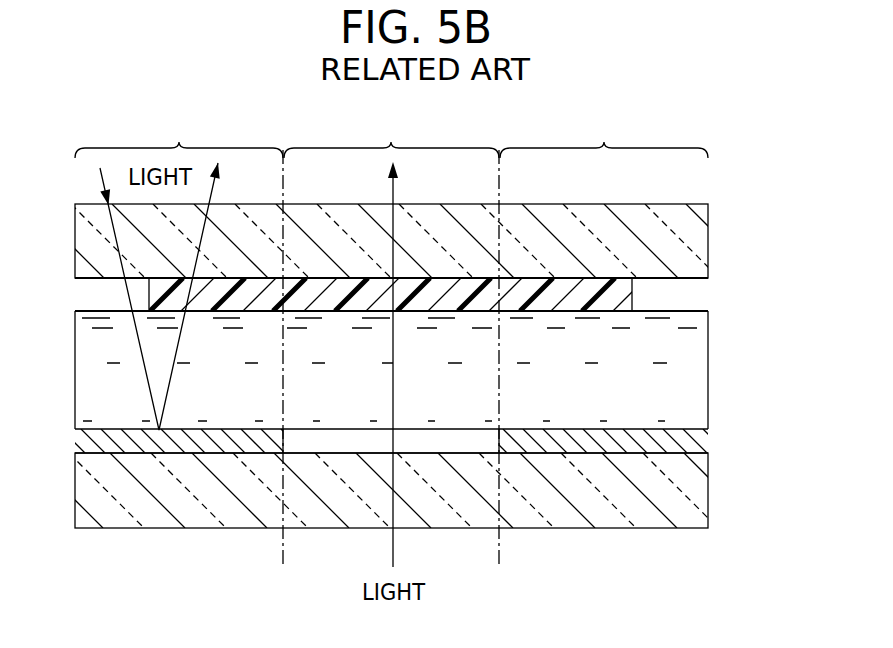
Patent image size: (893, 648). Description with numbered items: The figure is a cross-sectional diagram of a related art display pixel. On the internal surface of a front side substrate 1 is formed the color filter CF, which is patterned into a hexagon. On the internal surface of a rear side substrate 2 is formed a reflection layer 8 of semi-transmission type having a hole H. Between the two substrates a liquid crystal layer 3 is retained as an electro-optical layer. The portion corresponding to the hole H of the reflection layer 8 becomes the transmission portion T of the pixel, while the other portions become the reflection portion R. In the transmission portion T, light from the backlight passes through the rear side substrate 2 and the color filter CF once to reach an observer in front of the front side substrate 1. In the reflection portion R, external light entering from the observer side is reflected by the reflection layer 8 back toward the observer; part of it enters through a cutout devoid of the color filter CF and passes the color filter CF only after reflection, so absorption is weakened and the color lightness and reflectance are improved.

The front side substrate 1 is at (697, 241).
The color filter CF is at (633, 298).
The liquid crystal layer 3 is at (710, 378).
The reflection layer 8 is at (697, 442).
The rear side substrate 2 is at (698, 492).
The hole H is at (441, 443).
The reflection portion R is at (391, 134).
The transmission portion T is at (391, 133).